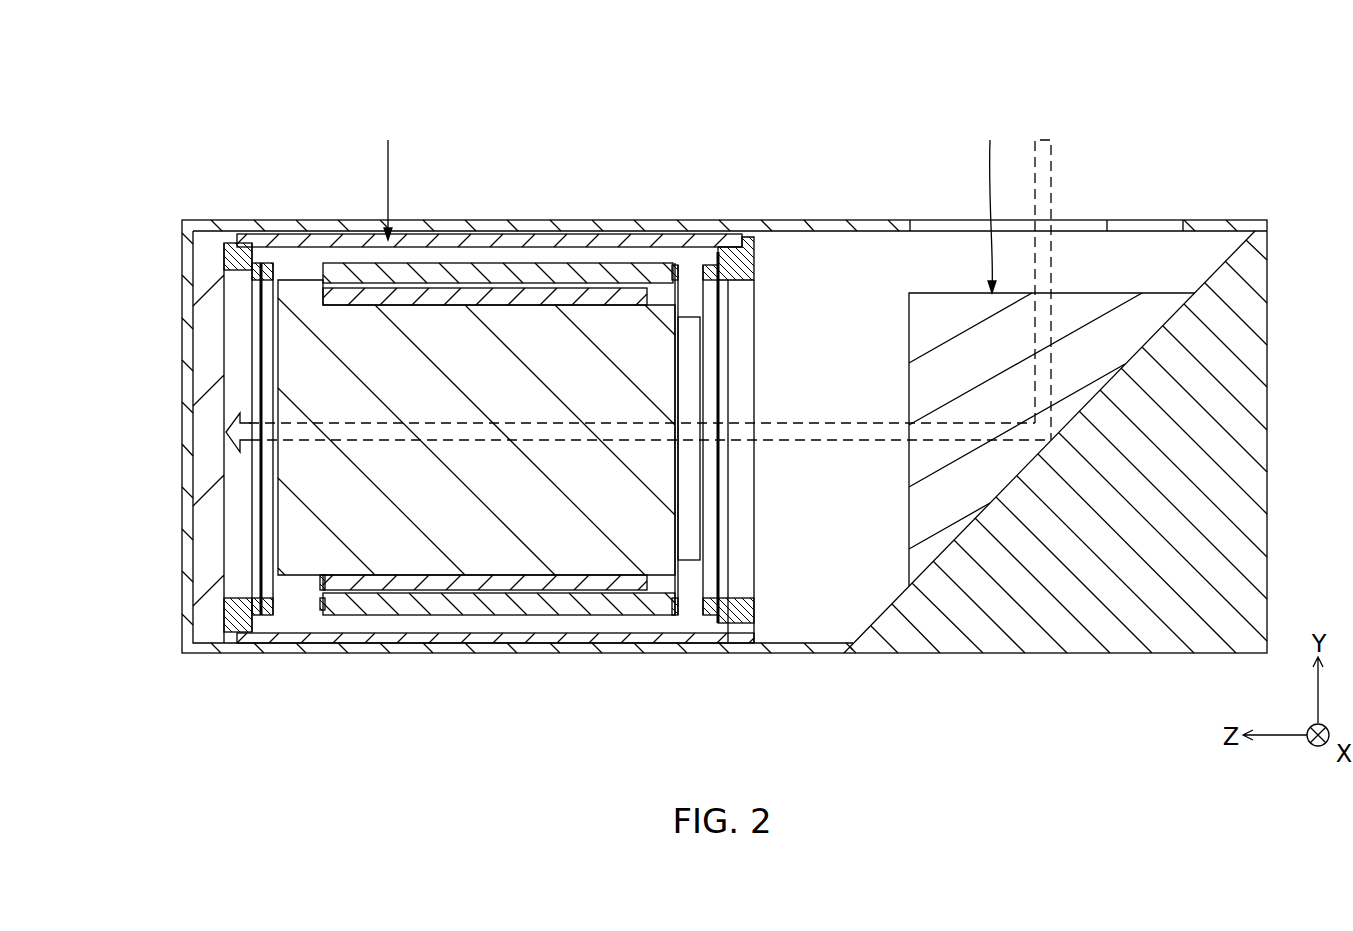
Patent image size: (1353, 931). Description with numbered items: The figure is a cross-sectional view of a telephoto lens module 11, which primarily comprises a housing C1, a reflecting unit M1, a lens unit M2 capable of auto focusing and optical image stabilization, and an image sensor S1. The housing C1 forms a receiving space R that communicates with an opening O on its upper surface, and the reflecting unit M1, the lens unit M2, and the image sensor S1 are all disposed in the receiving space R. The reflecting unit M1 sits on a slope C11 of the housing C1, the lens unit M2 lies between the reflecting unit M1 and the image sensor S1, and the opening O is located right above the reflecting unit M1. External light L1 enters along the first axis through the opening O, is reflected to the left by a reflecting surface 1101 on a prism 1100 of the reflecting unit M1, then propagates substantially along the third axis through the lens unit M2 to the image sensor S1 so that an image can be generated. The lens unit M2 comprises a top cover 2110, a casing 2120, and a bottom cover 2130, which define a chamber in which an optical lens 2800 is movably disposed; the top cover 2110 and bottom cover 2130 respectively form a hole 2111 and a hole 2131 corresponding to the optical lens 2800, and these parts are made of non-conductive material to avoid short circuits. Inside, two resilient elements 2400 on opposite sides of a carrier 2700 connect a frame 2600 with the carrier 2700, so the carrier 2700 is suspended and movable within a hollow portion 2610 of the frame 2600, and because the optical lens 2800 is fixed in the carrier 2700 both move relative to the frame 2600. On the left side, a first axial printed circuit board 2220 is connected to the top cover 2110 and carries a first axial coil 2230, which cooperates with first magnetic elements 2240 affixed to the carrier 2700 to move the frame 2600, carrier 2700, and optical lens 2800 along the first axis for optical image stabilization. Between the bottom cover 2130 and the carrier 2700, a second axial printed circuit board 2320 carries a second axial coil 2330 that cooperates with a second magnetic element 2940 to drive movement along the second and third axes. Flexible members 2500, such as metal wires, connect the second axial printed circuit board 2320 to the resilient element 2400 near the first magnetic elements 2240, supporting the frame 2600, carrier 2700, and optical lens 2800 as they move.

The telephoto lens module 11 is at (112, 95).
The top cover 2110 is at (237, 277).
The hole 2111 is at (237, 317).
The casing 2120 is at (487, 633).
The bottom cover 2130 is at (750, 248).
The hole 2131 is at (742, 578).
The first axial printed circuit board 2220 is at (260, 622).
The first axial coil 2230 is at (268, 262).
The first magnetic element 2240 is at (300, 292).
The second axial printed circuit board 2320 is at (727, 628).
The second axial coil 2330 is at (708, 265).
The resilient element 2400 is at (320, 610).
The flexible member 2500 is at (688, 600).
The frame 2600 is at (427, 273).
The hollow portion 2610 is at (412, 592).
The carrier 2700 is at (515, 293).
The optical lens 2800 is at (603, 337).
The second magnetic element 2940 is at (690, 337).
The prism 1100 is at (948, 320).
The reflecting surface 1101 is at (1088, 400).
The housing C1 is at (1243, 298).
The slope C11 is at (1213, 260).
The opening O is at (1161, 228).
The receiving space R is at (863, 262).
The external light L1 is at (1043, 256).
The image sensor S1 is at (205, 440).
The reflecting unit M1 is at (990, 203).
The lens unit M2 is at (388, 176).